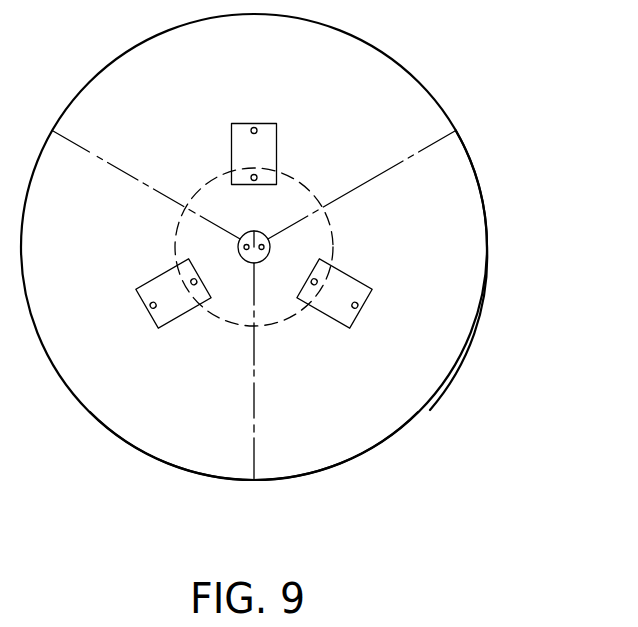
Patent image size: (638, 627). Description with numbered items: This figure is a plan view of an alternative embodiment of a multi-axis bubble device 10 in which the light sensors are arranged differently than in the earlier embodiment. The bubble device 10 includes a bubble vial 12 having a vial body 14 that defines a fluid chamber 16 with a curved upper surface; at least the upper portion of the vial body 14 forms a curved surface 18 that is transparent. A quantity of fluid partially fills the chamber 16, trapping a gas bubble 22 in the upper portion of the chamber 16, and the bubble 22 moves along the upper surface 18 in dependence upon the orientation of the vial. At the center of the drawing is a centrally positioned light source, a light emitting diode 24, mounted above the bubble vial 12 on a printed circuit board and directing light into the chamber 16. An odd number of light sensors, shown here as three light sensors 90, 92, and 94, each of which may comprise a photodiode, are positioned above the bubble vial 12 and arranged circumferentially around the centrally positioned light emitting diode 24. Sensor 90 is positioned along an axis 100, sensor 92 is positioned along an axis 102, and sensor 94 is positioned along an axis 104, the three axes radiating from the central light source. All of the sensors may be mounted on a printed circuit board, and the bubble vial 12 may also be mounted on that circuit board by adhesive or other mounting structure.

The bubble device 10 is at (510, 206).
The bubble vial 12 is at (466, 142).
The vial body 14 is at (443, 348).
The fluid chamber 16 is at (172, 448).
The curved surface 18 is at (330, 448).
The gas bubble 22 is at (317, 194).
The light emitting diode 24 is at (242, 260).
The light sensor 90 is at (267, 125).
The light sensor 92 is at (349, 283).
The light sensor 94 is at (162, 282).
The axis 100 is at (256, 387).
The axis 102 is at (107, 158).
The axis 104 is at (405, 162).